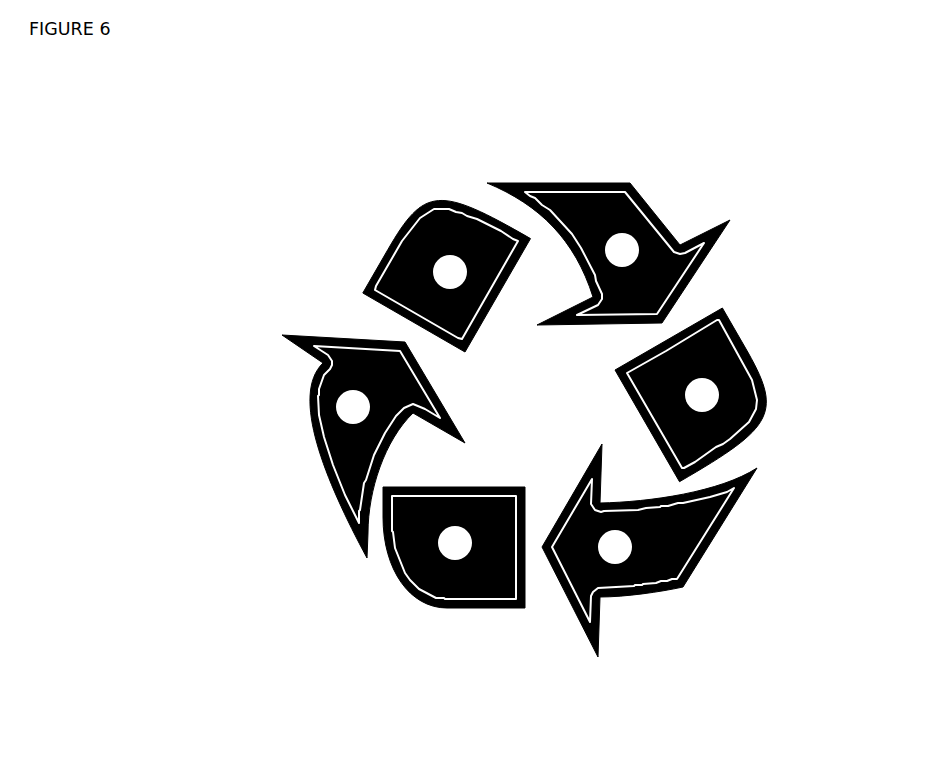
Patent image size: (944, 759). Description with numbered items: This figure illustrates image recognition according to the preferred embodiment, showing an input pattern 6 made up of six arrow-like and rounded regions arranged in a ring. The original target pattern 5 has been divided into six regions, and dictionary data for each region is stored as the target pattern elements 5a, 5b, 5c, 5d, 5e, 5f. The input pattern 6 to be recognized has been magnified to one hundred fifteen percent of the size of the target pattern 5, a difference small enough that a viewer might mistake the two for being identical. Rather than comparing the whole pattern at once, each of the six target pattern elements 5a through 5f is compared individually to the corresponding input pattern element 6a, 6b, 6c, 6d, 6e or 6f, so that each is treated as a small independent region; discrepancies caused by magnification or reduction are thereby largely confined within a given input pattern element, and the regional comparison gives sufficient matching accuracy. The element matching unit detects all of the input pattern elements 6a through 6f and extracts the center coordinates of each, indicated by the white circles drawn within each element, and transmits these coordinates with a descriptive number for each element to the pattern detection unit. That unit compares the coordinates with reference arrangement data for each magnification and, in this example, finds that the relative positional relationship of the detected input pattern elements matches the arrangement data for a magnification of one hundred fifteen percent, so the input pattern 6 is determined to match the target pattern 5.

The target pattern 5 is at (519, 396).
The target pattern element 5a is at (318, 487).
The target pattern element 5b is at (393, 247).
The target pattern element 5c is at (662, 217).
The target pattern element 5d is at (768, 388).
The target pattern element 5e is at (677, 578).
The target pattern element 5f is at (448, 610).
The input pattern 6 is at (519, 396).
The input pattern element 6a is at (322, 446).
The input pattern element 6b is at (428, 247).
The input pattern element 6c is at (608, 210).
The input pattern element 6d is at (736, 395).
The input pattern element 6e is at (692, 553).
The input pattern element 6f is at (454, 592).